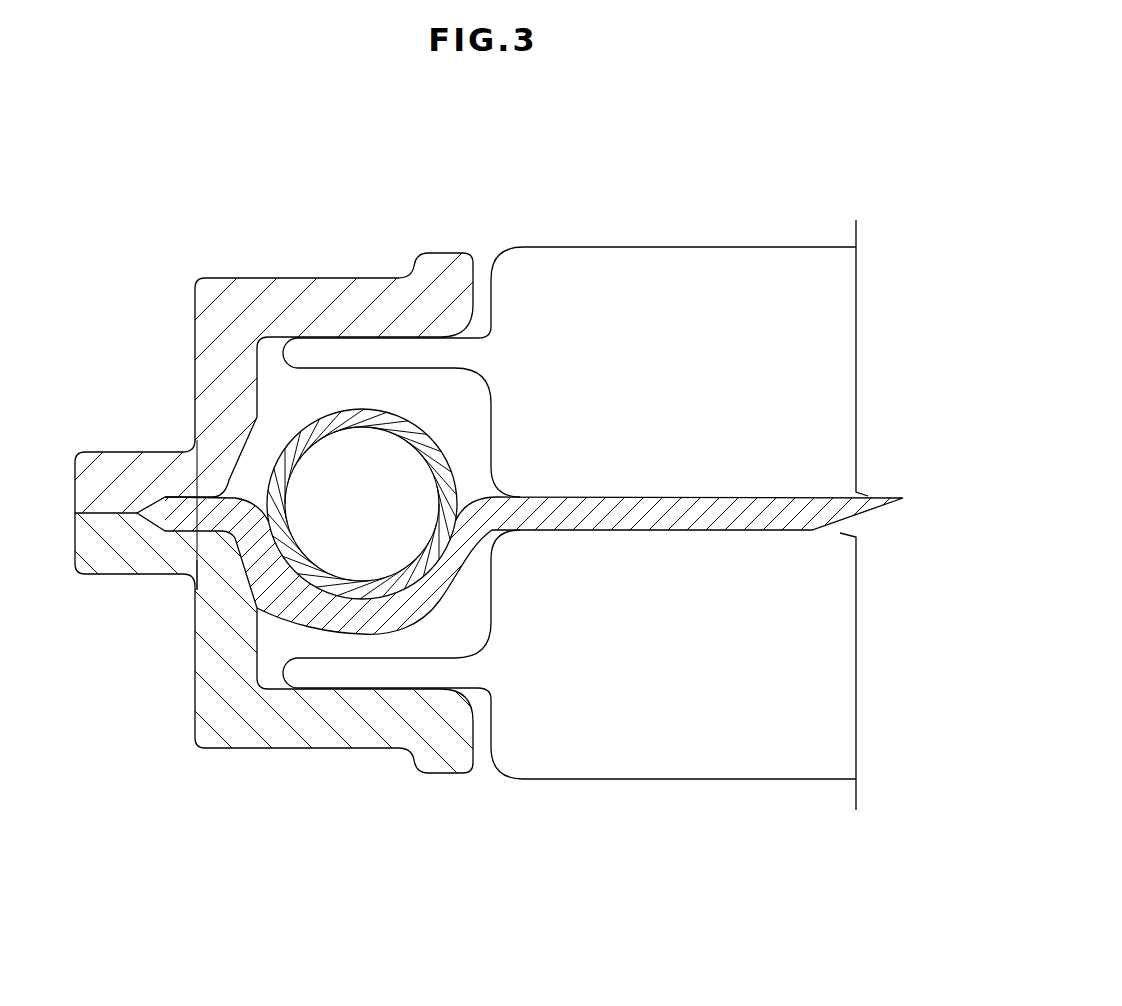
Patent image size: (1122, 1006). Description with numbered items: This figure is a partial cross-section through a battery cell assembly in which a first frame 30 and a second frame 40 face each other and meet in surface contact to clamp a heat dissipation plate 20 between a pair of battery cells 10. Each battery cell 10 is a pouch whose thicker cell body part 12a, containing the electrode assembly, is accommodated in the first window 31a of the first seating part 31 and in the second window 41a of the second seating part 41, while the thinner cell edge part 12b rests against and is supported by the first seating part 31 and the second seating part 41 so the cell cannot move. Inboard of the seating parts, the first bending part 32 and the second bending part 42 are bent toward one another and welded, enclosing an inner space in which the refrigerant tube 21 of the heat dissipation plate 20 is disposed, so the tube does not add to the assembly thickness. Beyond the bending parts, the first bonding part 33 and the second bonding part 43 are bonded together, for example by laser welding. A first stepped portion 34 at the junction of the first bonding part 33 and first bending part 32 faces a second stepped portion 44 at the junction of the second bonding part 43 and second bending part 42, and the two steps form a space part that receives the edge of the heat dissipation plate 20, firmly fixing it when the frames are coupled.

The battery cell 10 is at (735, 247).
The cell body part 12a is at (633, 268).
The cell edge part 12b is at (370, 357).
The heat dissipation plate 20 is at (758, 508).
The refrigerant tube 21 is at (423, 450).
The first frame 30 is at (292, 829).
The first seating part 31 is at (292, 726).
The first window 31a is at (489, 741).
The first bending part 32 is at (203, 698).
The first bonding part 33 is at (113, 560).
The first stepped portion 34 is at (195, 590).
The second frame 40 is at (292, 181).
The second seating part 41 is at (292, 300).
The second window 41a is at (489, 283).
The second bending part 42 is at (204, 330).
The second bonding part 43 is at (112, 470).
The second stepped portion 44 is at (197, 445).